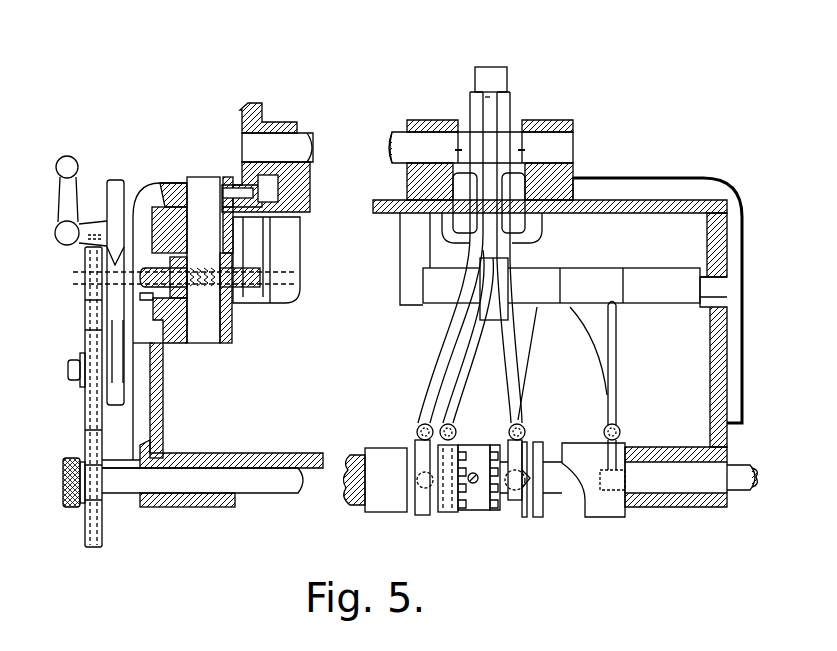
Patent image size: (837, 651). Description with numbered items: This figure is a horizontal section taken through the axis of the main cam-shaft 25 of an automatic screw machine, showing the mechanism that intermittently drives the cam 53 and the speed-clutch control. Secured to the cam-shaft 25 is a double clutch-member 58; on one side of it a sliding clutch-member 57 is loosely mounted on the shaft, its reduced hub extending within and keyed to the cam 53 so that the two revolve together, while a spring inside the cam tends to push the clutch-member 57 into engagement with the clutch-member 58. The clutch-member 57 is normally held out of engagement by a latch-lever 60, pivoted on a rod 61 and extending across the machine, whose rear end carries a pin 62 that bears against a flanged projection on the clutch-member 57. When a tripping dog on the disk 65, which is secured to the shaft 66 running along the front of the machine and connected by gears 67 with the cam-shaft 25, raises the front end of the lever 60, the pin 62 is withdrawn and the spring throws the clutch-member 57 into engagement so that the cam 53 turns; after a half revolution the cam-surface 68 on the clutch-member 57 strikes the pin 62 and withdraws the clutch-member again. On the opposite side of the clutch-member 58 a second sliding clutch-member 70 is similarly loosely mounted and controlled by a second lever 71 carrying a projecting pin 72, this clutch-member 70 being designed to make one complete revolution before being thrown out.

The main cam-shaft 25 is at (763, 480).
The cam 53 is at (608, 503).
The sliding clutch-member 57 is at (495, 505).
The double clutch-member 58 is at (473, 500).
The latch-lever 60 is at (512, 252).
The rod 61 is at (720, 287).
The pin 62 is at (513, 485).
The disk 65 is at (485, 72).
The shaft 66 is at (568, 143).
The gears 67 is at (245, 123).
The cam-surface 68 is at (523, 498).
The sliding clutch-member 70 is at (448, 503).
The second lever 71 is at (475, 250).
The projecting pin 72 is at (420, 493).